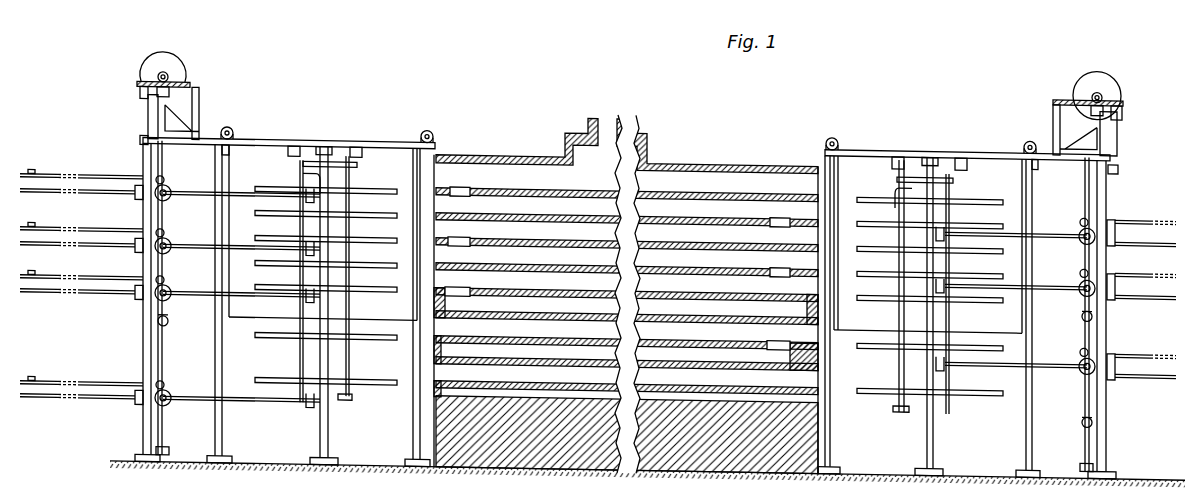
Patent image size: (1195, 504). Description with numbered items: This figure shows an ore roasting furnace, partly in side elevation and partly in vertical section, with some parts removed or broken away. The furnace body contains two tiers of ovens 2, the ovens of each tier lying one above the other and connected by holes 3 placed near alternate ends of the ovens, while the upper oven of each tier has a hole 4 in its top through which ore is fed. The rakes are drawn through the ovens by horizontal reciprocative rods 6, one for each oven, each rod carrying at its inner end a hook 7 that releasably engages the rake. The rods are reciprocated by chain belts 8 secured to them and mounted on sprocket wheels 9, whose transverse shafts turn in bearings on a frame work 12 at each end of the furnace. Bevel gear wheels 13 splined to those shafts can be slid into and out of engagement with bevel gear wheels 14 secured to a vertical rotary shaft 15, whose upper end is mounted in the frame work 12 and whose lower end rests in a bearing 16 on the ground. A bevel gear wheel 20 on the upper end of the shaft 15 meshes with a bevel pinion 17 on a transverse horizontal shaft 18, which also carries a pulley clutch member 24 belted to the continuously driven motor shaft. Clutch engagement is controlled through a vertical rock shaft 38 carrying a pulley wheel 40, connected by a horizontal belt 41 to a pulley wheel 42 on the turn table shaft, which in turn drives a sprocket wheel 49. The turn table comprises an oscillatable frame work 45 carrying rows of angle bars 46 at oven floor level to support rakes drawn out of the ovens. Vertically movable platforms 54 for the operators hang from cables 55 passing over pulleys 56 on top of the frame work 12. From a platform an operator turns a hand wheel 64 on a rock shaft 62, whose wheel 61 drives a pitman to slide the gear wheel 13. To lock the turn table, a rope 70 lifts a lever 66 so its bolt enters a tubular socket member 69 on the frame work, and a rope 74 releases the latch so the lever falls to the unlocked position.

The ovens 2 is at (626, 314).
The holes 3 is at (470, 190).
The hole 4 is at (783, 159).
The horizontal reciprocative rods 6 is at (116, 181).
The hook 7 is at (165, 186).
The chain belts 8 is at (116, 197).
The sprocket wheels 9 is at (170, 204).
The frame work 12 is at (262, 143).
The bevel gear wheels 13 is at (170, 222).
The bevel gear wheels 14 is at (170, 213).
The vertical rotary shafts 15 is at (163, 170).
The bearings 16 is at (169, 455).
The bevel pinions 17 is at (170, 80).
The transverse horizontal shafts 18 is at (190, 88).
The bevel gear wheels 20 is at (140, 97).
The pulley clutch member 24 is at (165, 62).
The vertical rock shaft 38 is at (148, 125).
The pulley wheel 40 is at (140, 145).
The horizontal belt 41 is at (262, 158).
The pulley wheel 42 is at (328, 152).
The oscillatable frame works 45 is at (300, 366).
The angle bars 46 is at (372, 195).
The sprocket wheel 49 is at (312, 164).
The vertically movable platforms 54 is at (392, 320).
The cables 55 is at (416, 165).
The pulleys 56 is at (230, 131).
The wheels 61 is at (138, 246).
The rock shafts 62 is at (208, 196).
The hand wheel 64 is at (304, 248).
The lever 66 is at (303, 178).
The tubular socket members 69 is at (362, 152).
The rope 70 is at (350, 358).
The rope 74 is at (352, 366).